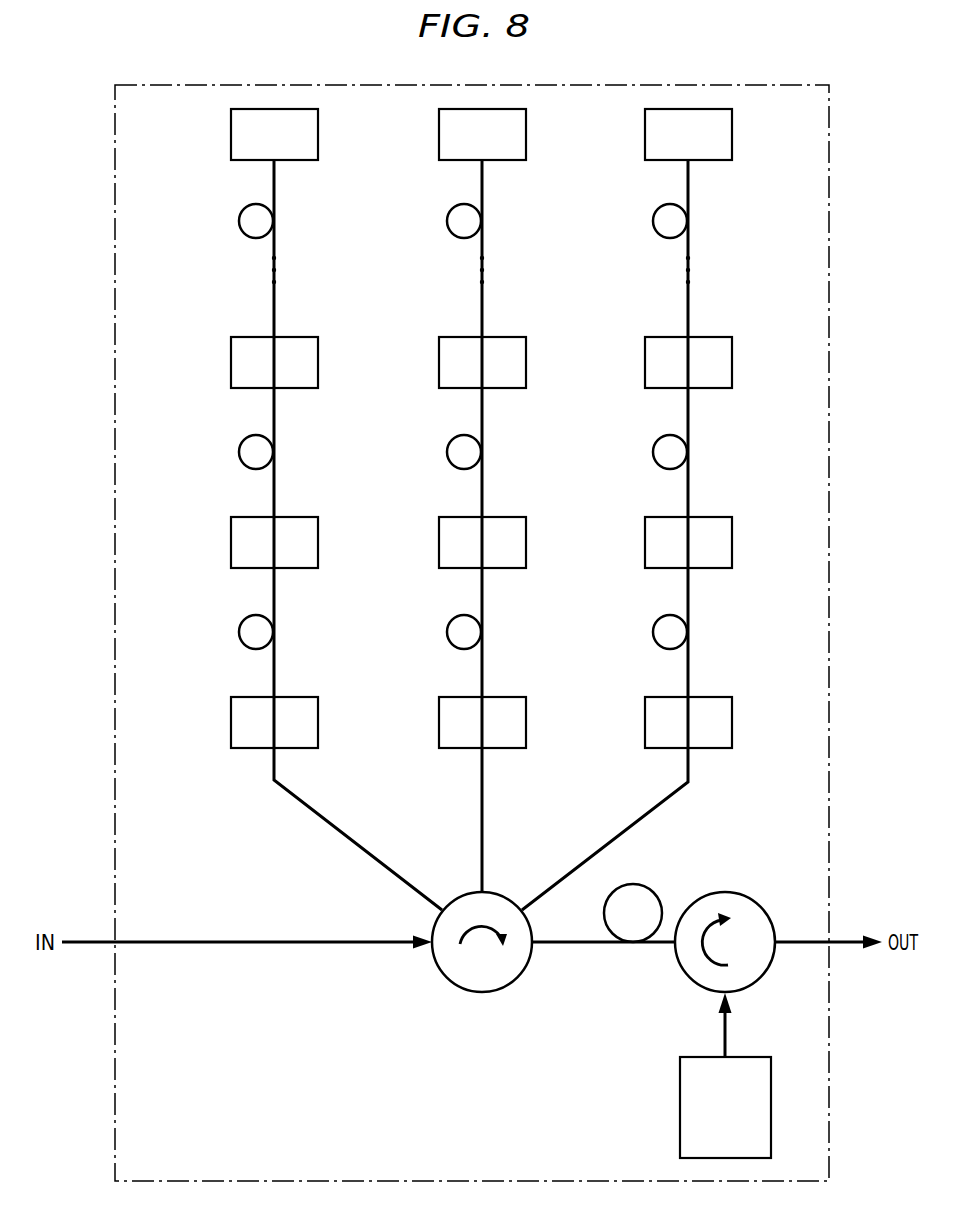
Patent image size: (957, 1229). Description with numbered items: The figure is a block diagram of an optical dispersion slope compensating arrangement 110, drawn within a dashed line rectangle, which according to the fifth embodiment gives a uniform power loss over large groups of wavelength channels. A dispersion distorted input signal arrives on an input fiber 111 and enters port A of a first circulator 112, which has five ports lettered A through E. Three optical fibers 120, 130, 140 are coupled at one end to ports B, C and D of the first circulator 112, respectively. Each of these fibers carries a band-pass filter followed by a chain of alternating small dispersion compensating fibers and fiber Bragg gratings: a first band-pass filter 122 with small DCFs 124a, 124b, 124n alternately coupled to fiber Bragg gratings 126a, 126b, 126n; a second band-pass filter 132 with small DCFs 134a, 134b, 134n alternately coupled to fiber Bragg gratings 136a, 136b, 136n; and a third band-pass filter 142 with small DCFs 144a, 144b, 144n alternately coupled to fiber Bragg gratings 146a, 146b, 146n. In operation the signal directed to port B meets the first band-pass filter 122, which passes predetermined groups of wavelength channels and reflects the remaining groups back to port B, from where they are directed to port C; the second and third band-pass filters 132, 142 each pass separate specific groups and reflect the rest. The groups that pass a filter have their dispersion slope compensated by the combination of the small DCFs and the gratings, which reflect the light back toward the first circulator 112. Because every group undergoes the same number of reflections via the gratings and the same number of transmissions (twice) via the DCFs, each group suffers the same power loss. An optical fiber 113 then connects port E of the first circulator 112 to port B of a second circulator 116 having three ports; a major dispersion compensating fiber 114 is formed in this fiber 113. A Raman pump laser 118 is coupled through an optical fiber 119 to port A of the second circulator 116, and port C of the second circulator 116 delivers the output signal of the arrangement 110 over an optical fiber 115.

The optical dispersion slope compensating arrangement 110 is at (115, 268).
The input fiber 111 is at (157, 937).
The first circulator 112 is at (438, 972).
The optical fiber 113 is at (556, 946).
The major dispersion compensating fiber 114 is at (633, 884).
The optical fiber 115 is at (799, 940).
The second circulator 116 is at (685, 973).
The Raman pump laser 118 is at (680, 1092).
The optical fiber 119 is at (728, 1040).
The optical fiber 120 is at (276, 765).
The optical fiber 130 is at (484, 765).
The optical fiber 140 is at (690, 765).
The first band-pass filter 122 is at (231, 730).
The second band-pass filter 132 is at (439, 730).
The third band-pass filter 142 is at (645, 730).
The small dispersion compensating fiber 124a is at (239, 634).
The small dispersion compensating fiber 124b is at (239, 454).
The small dispersion compensating fiber 124n is at (239, 222).
The small dispersion compensating fiber 134a is at (447, 634).
The small dispersion compensating fiber 134b is at (447, 454).
The small dispersion compensating fiber 134n is at (447, 222).
The small dispersion compensating fiber 144a is at (653, 634).
The small dispersion compensating fiber 144b is at (653, 454).
The small dispersion compensating fiber 144n is at (653, 222).
The fiber Bragg grating 126a is at (231, 545).
The fiber Bragg grating 126b is at (231, 365).
The fiber Bragg grating 126n is at (231, 137).
The fiber Bragg grating 136a is at (439, 545).
The fiber Bragg grating 136b is at (439, 365).
The fiber Bragg grating 136n is at (439, 137).
The fiber Bragg grating 146a is at (645, 545).
The fiber Bragg grating 146b is at (645, 365).
The fiber Bragg grating 146n is at (645, 137).